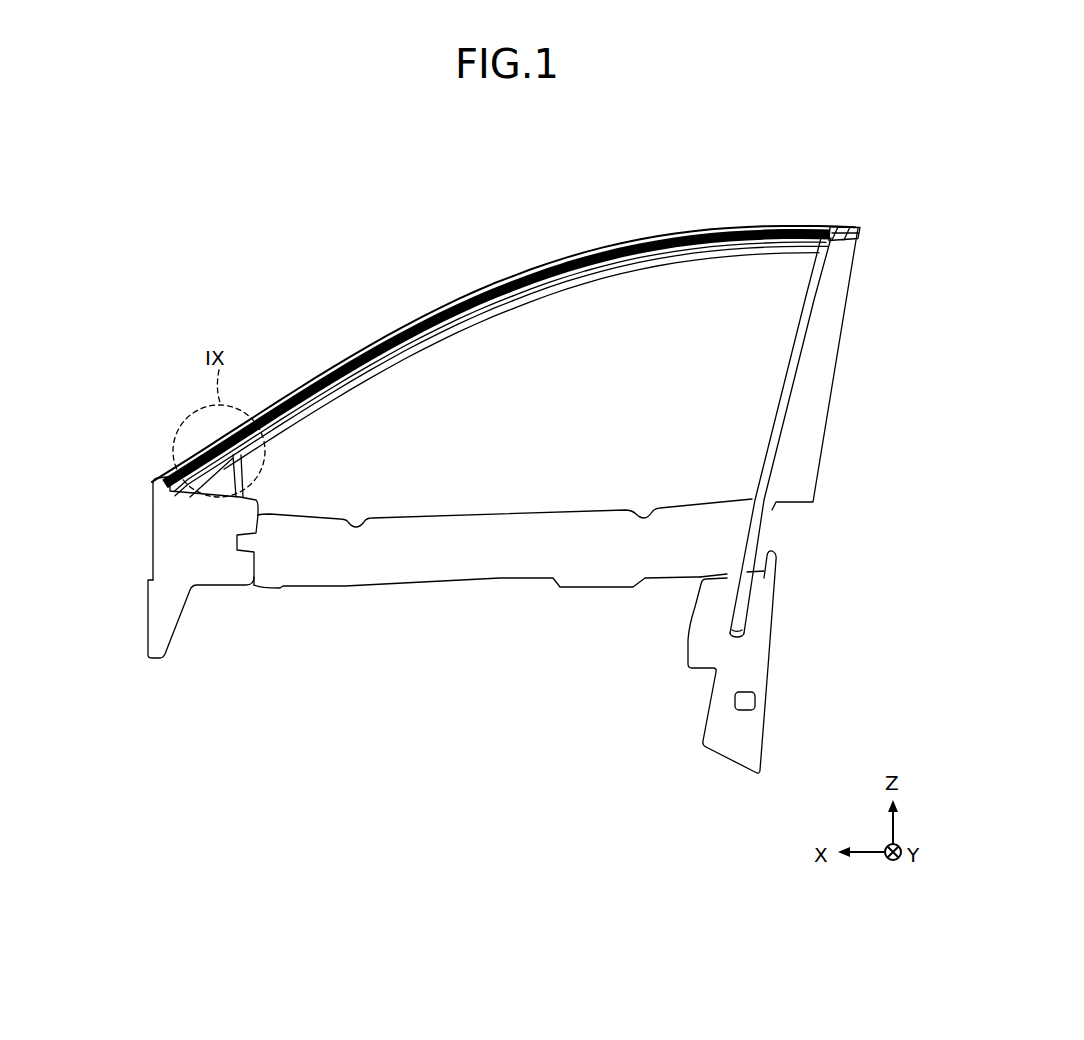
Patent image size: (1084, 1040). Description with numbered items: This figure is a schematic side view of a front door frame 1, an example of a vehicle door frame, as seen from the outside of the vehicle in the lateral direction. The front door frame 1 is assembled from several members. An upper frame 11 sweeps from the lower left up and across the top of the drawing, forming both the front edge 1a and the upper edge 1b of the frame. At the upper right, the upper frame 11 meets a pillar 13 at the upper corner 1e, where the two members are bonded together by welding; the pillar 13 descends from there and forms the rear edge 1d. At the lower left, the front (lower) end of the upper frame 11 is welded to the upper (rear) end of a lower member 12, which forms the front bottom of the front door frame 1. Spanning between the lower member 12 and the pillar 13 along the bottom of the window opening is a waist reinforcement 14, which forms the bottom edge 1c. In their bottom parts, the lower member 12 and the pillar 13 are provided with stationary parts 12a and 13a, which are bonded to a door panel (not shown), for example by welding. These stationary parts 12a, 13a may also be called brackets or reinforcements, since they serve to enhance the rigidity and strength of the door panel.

The front door frame 1 is at (818, 156).
The front edge 1a is at (392, 333).
The upper edge 1b is at (717, 231).
The bottom edge 1c is at (490, 584).
The rear edge 1d is at (833, 392).
The upper corner 1e is at (859, 228).
The upper frame 11 is at (605, 246).
The lower member 12 is at (149, 548).
The stationary part 12a is at (165, 603).
The pillar 13 is at (845, 345).
The stationary part 13a is at (752, 678).
The waist reinforcement 14 is at (360, 590).